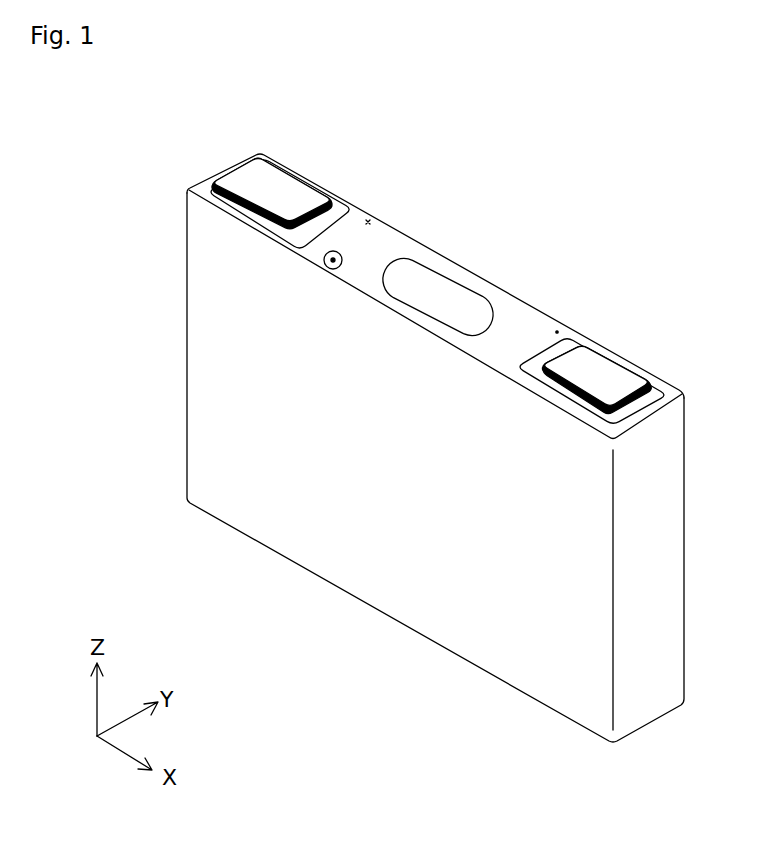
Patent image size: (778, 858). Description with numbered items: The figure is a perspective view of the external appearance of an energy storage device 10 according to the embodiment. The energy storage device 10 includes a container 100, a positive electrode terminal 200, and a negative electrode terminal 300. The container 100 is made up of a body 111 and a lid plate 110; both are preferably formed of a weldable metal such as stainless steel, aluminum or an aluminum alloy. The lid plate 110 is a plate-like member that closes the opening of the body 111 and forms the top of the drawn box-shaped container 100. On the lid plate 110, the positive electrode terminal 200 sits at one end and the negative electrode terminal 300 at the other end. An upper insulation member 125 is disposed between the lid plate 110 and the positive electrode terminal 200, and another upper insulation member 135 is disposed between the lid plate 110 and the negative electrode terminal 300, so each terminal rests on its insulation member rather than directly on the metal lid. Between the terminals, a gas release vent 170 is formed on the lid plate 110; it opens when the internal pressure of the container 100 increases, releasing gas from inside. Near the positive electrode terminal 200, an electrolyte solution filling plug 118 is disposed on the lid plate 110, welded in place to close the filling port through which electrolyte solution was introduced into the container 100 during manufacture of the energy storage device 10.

The energy storage device 10 is at (608, 146).
The container 100 is at (117, 252).
The lid plate 110 is at (304, 260).
The body 111 is at (207, 316).
The electrolyte solution filling plug 118 is at (342, 256).
The upper insulation member 125 is at (336, 210).
The upper insulation member 135 is at (568, 342).
The gas release vent 170 is at (437, 295).
The positive electrode terminal 200 is at (280, 177).
The negative electrode terminal 300 is at (598, 368).